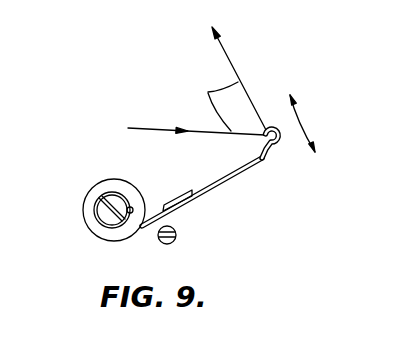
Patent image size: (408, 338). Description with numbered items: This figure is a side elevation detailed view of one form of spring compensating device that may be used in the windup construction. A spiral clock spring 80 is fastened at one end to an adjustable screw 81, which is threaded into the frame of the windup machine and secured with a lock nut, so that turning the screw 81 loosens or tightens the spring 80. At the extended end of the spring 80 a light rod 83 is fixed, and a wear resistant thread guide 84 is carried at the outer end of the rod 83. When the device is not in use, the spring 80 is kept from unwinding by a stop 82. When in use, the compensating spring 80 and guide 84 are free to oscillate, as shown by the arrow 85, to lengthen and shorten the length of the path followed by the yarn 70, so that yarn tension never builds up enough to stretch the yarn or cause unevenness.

The yarn 70 is at (210, 106).
The spiral clock spring 80 is at (107, 178).
The adjustable screw 81 is at (103, 219).
The stop 82 is at (177, 231).
The light rod 83 is at (222, 179).
The wear resistant thread guide 84 is at (273, 142).
The direction of movement arrow 85 is at (298, 113).